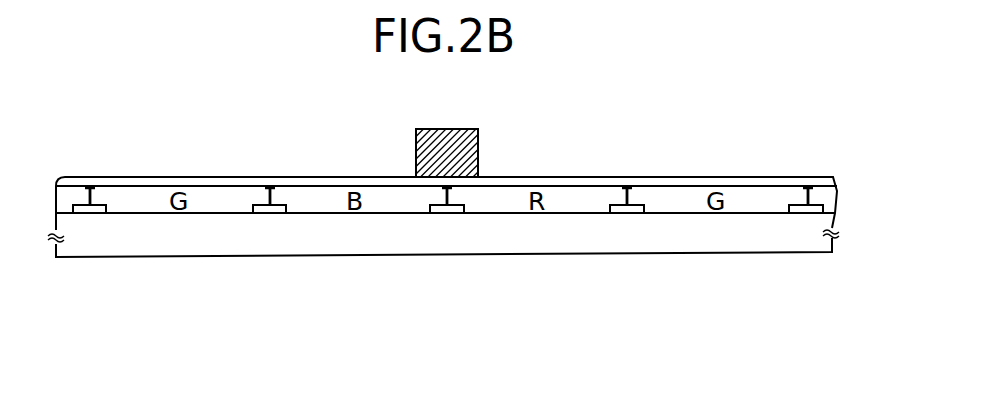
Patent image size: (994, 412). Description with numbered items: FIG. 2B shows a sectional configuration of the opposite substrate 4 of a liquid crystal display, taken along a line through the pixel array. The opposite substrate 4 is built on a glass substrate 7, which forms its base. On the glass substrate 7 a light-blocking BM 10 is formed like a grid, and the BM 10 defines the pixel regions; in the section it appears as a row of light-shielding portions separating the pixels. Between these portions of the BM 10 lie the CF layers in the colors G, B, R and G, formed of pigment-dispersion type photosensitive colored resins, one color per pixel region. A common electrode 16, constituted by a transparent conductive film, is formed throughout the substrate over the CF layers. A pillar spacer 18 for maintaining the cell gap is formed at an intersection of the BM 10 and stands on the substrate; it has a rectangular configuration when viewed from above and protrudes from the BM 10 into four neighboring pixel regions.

The opposite substrate 4 is at (613, 267).
The glass substrate 7 is at (832, 241).
The BM 10 is at (816, 205).
The common electrode 16 is at (755, 180).
The pillar spacer 18 is at (478, 143).